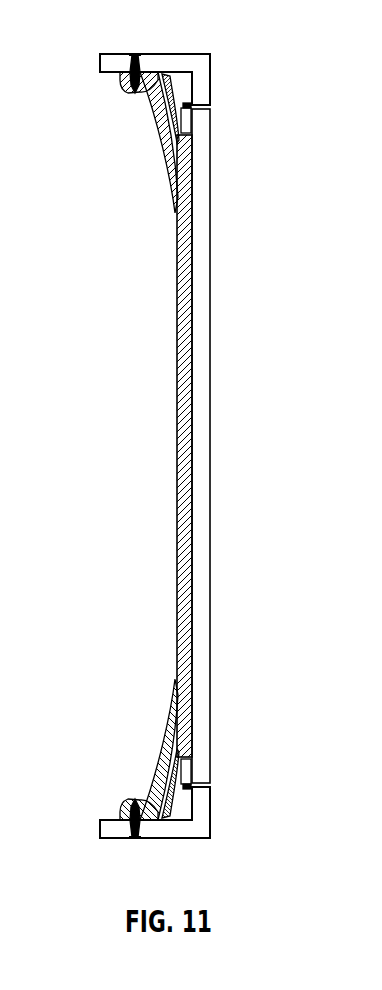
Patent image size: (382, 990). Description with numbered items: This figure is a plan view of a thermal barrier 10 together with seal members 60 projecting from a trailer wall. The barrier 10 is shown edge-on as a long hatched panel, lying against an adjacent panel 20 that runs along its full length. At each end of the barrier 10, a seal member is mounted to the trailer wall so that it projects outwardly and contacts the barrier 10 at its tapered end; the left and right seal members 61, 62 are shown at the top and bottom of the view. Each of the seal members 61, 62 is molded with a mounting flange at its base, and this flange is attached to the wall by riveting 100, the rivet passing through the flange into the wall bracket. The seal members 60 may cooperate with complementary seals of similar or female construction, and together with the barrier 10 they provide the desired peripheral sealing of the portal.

The barrier 10 is at (183, 300).
The back panel 20 is at (202, 207).
The seal members 60 is at (173, 98).
The left seal member 61 is at (150, 72).
The right seal member 62 is at (152, 822).
The riveting 100 is at (135, 55).